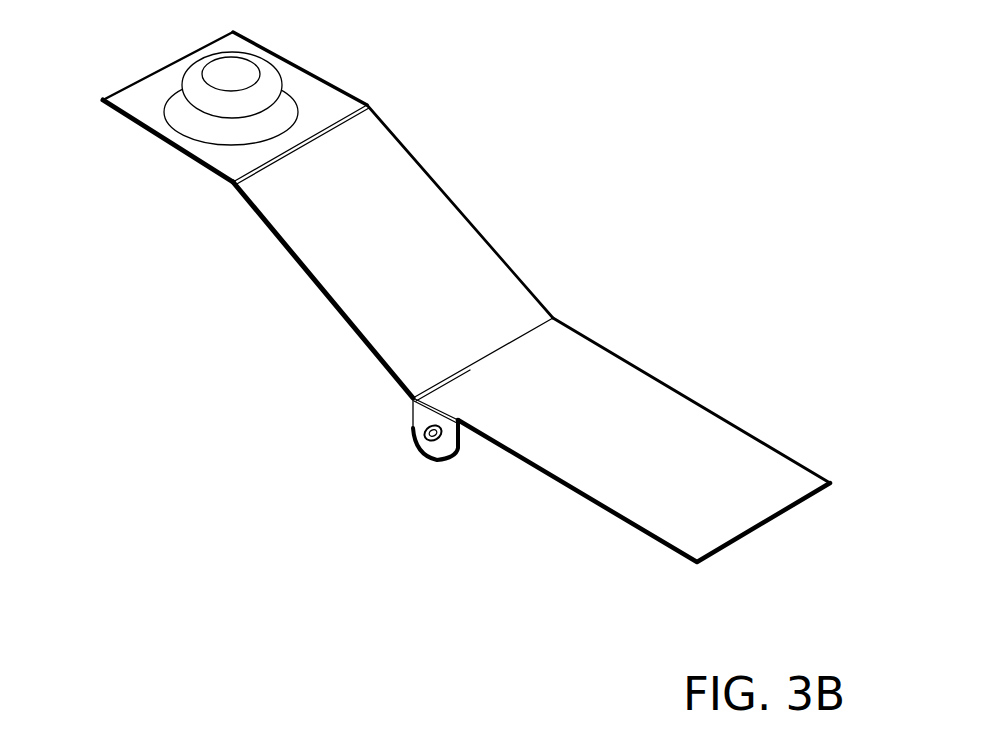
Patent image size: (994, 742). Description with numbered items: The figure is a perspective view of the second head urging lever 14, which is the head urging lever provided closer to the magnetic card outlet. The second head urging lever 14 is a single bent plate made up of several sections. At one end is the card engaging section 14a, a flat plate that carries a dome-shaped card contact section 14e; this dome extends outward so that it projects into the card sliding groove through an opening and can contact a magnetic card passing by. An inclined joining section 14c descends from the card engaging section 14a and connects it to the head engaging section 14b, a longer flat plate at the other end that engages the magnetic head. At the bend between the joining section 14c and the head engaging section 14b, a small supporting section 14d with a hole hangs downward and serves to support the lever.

The second head urging lever 14 is at (444, 297).
The card engaging section 14a is at (217, 153).
The head engaging section 14b is at (623, 393).
The joining section 14c is at (350, 273).
The supporting section 14d is at (422, 417).
The dome-shaped card contact section 14e is at (210, 98).